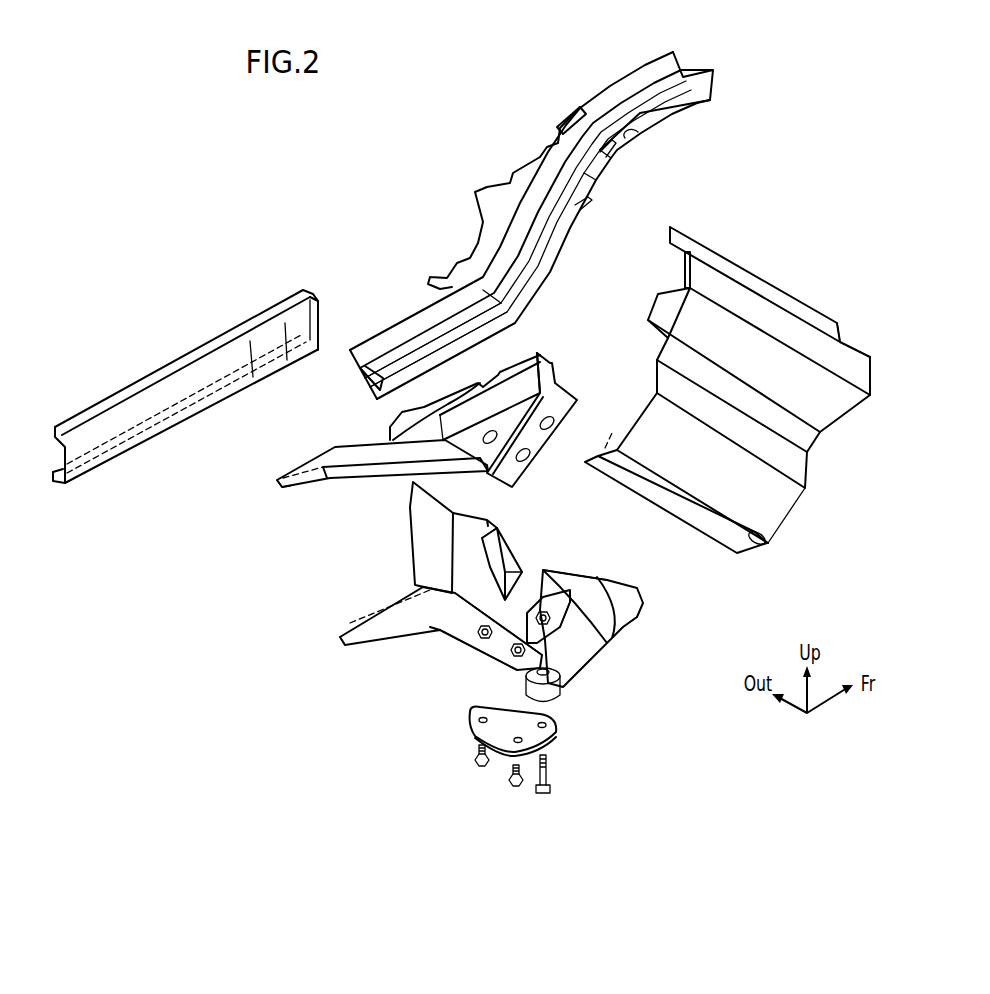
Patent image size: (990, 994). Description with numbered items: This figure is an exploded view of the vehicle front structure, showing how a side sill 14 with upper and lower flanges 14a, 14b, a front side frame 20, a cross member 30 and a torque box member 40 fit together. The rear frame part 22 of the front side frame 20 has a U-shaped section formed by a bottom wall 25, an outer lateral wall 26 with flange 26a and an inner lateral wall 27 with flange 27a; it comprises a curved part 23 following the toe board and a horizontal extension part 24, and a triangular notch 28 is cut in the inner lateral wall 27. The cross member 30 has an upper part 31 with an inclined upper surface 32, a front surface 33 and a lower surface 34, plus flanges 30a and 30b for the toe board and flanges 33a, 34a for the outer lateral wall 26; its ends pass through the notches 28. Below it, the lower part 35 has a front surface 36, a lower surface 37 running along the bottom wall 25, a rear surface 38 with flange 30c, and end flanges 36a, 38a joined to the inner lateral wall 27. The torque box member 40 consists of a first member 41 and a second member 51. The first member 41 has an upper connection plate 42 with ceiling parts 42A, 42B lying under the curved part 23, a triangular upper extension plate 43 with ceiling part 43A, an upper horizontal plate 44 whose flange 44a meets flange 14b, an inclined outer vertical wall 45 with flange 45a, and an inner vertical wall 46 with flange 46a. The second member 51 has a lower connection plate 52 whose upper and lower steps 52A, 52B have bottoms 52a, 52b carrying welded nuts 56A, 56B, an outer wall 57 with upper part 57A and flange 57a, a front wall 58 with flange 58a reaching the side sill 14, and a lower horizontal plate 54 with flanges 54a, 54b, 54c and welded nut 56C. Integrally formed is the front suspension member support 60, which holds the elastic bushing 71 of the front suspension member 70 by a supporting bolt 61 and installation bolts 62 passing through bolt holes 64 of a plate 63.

The side sill 14 is at (182, 402).
The upper flange 14a is at (137, 383).
The lower flange 14b is at (57, 482).
The front side frame 20 is at (522, 212).
The rear frame part 22 is at (577, 110).
The curved part 23 is at (572, 215).
The extension part 24 is at (468, 326).
The bottom wall 25 is at (393, 350).
The outer lateral wall 26 is at (484, 211).
The flange 26a is at (455, 262).
The inner lateral wall 27 is at (373, 377).
The flange 27a is at (483, 292).
The notch 28 is at (632, 133).
The cross member 30 is at (770, 390).
The flange 30a is at (768, 293).
The flange 30b is at (813, 437).
The flange 30c is at (717, 545).
The upper part 31 is at (876, 395).
The upper surface 32 is at (843, 340).
The front surface 33 is at (853, 367).
The flange 33a is at (687, 268).
The lower surface 34 is at (833, 403).
The flange 34a is at (667, 288).
The lower part 35 is at (806, 498).
The front surface 36 is at (787, 460).
The flange 36a is at (655, 375).
The lower surface 37 is at (770, 510).
The rear surface 38 is at (770, 545).
The flange 38a is at (606, 428).
The torque box member 40 is at (405, 547).
The first member 41 is at (317, 488).
The upper connection plate 42 is at (567, 400).
The ceiling part 42A is at (547, 428).
The ceiling part 42B is at (525, 458).
The upper extension plate 43 is at (513, 413).
The ceiling part 43A is at (483, 437).
The upper horizontal plate 44 is at (360, 453).
The flange 44a is at (283, 488).
The outer vertical wall 45 is at (455, 422).
The flange 45a is at (433, 408).
The inner vertical wall 46 is at (378, 478).
The flange 46a is at (340, 478).
The second member 51 is at (494, 607).
The lower connection plate 52 is at (550, 597).
The bottom 52a is at (547, 570).
The upper step 52A is at (623, 627).
The lower step 52B is at (573, 667).
The bottom 52b is at (503, 663).
The lower horizontal plate 54 is at (427, 588).
The flange 54a is at (363, 617).
The flange 54b is at (447, 655).
The flange 54c is at (387, 637).
The welded nut 56A is at (560, 580).
The welded nut 56B is at (523, 660).
The welded nut 56C is at (483, 640).
The outer wall 57 is at (517, 573).
The flange 57a is at (498, 530).
The upper part 57A is at (512, 558).
The front wall 58 is at (422, 533).
The flange 58a is at (463, 517).
The front suspension member support 60 is at (524, 779).
The supporting bolt 61 is at (567, 774).
The installation bolt 62 is at (480, 770).
The plate 63 is at (562, 737).
The bolt hole 64 is at (562, 725).
The front suspension member 70 is at (625, 625).
The elastic bushing 71 is at (565, 695).